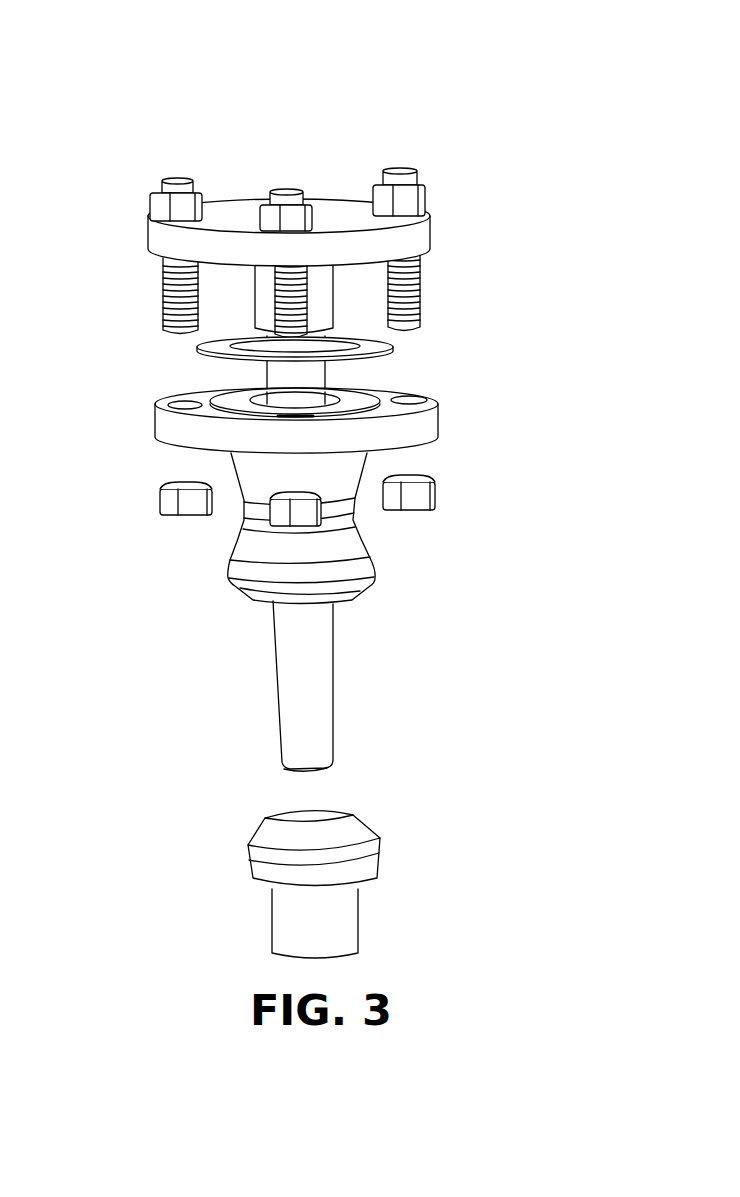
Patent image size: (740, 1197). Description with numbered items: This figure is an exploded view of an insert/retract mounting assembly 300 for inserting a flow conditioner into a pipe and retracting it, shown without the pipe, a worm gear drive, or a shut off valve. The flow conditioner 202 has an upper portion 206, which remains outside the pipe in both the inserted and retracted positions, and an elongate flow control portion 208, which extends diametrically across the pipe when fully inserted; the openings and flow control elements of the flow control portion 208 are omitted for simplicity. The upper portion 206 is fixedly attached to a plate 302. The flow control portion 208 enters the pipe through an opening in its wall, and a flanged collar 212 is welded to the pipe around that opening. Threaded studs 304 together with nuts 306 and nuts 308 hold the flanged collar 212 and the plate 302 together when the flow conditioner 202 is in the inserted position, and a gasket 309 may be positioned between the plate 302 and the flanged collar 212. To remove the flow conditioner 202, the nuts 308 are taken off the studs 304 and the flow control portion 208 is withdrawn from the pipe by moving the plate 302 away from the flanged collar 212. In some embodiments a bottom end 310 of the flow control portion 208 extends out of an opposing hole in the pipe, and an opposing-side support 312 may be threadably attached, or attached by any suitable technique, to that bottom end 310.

The insert/retract mounting assembly 300 is at (470, 112).
The plate 302 is at (422, 233).
The threaded studs 304 is at (163, 290).
The nuts 306 is at (148, 203).
The upper portion 206 is at (317, 303).
The gasket 309 is at (197, 357).
The flanged collar 212 is at (440, 418).
The nuts 308 is at (160, 503).
The flow conditioner 202 is at (337, 618).
The flow control portion 208 is at (333, 687).
The bottom end 310 is at (320, 772).
The opposing-side support 312 is at (263, 888).